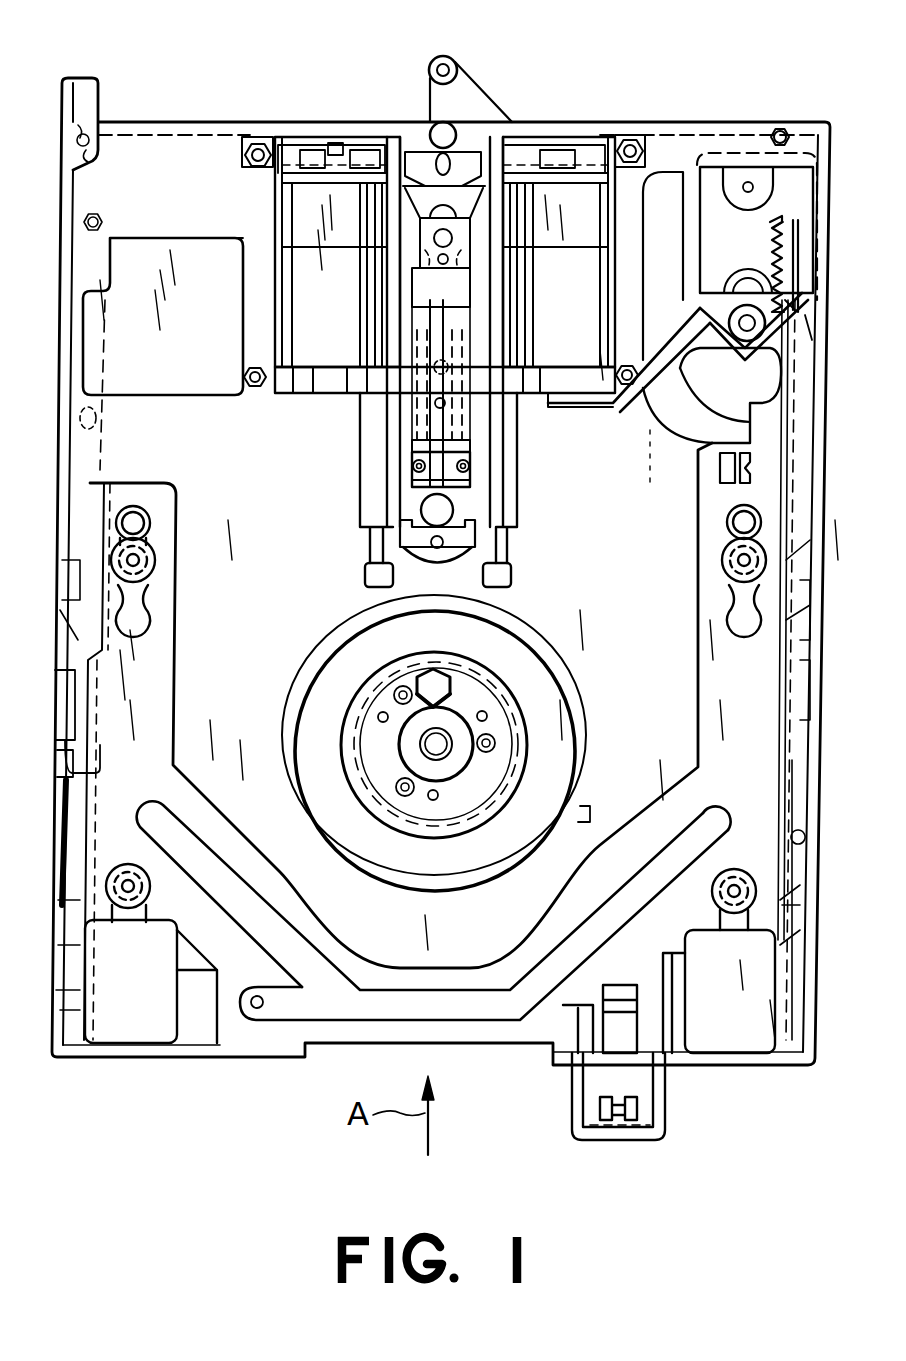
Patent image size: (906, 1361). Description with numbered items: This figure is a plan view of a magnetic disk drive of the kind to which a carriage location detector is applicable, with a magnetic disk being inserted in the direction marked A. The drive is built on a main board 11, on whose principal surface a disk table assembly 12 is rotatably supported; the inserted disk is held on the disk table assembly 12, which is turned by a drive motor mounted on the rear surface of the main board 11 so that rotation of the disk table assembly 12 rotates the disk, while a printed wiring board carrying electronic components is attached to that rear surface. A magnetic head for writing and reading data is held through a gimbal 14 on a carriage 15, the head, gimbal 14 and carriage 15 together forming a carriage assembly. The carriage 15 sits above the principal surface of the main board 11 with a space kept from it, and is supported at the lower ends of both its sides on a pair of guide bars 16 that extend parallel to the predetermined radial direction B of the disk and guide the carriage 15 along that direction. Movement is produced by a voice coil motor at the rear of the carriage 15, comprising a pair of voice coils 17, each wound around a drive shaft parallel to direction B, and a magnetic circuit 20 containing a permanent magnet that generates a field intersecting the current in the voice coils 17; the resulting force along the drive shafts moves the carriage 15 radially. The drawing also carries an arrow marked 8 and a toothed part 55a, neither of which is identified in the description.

The direction of loading arm movement 8 is at (441, 3).
The main board 11 is at (180, 1060).
The disk table assembly 12 is at (472, 700).
The gimbal 14 is at (458, 488).
The carriage 15 is at (478, 430).
The guide bars 16 is at (375, 492).
The voice coils 17 is at (268, 205).
The magnetic circuit 20 is at (330, 392).
The rack gear 55a is at (773, 226).